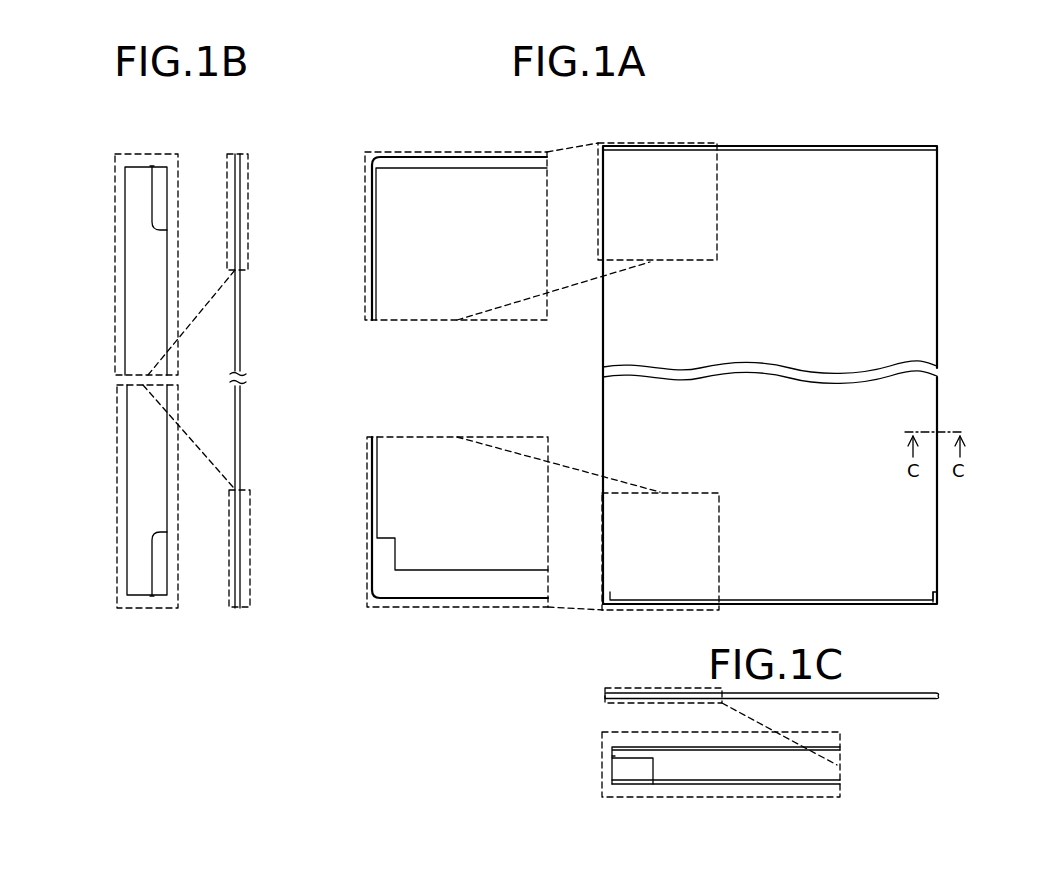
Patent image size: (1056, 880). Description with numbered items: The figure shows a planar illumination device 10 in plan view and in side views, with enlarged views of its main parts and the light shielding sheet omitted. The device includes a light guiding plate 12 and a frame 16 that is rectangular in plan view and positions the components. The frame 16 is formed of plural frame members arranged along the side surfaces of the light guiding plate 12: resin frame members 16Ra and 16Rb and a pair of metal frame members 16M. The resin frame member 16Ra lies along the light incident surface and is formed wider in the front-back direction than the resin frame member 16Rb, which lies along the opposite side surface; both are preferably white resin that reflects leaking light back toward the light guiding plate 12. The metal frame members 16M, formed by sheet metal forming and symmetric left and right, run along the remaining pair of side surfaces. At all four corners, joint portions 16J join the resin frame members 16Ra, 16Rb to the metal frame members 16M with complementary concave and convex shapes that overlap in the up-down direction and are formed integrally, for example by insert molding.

In FIG. 1B, the planar illumination device 10 is at (255, 319).
In FIG. 1A, the planar illumination device 10 is at (955, 226).
In FIG. 1C, the planar illumination device 10 is at (945, 696).
In FIG. 1A, the light guiding plate 12 is at (798, 468).
In FIG. 1A, the frame 16 is at (937, 280).
In FIG. 1B, the metal frame member 16M is at (138, 257).
In FIG. 1A, the metal frame member 16M is at (376, 247).
In FIG. 1C, the metal frame member 16M is at (637, 773).
In FIG. 1B, the resin frame member 16Ra is at (158, 568).
In FIG. 1A, the resin frame member 16Ra is at (468, 568).
In FIG. 1C, the resin frame member 16Ra is at (712, 772).
In FIG. 1B, the resin frame member 16Rb is at (158, 192).
In FIG. 1A, the resin frame member 16Rb is at (785, 145).
In FIG. 1B, the joint portion 16J is at (151, 164).
In FIG. 1A, the joint portion 16J is at (371, 157).
In FIG. 1C, the joint portion 16J is at (610, 759).